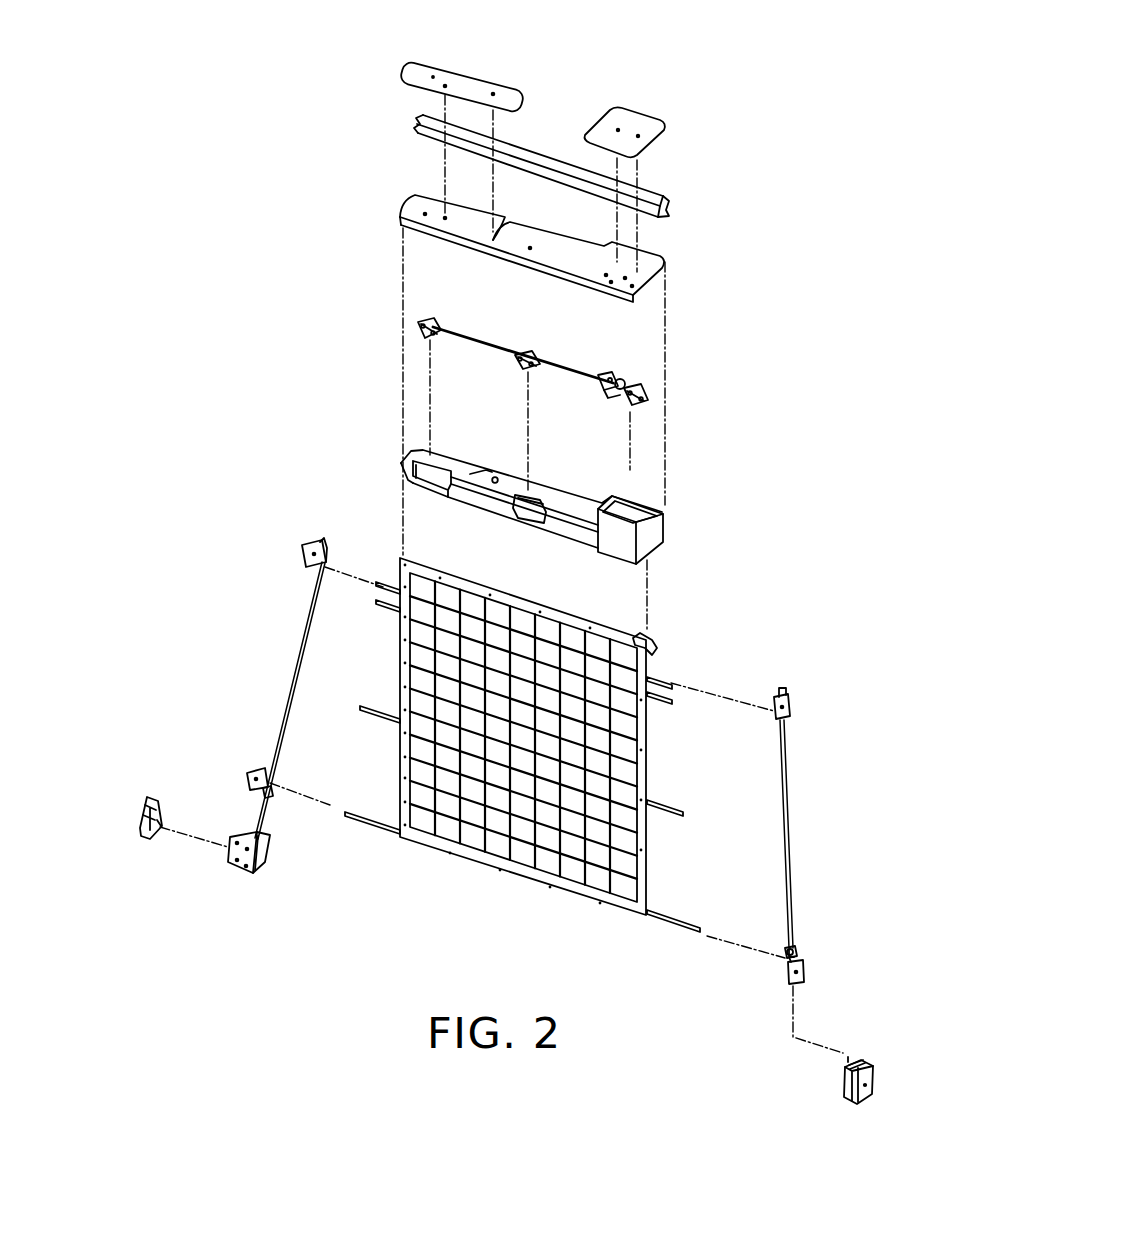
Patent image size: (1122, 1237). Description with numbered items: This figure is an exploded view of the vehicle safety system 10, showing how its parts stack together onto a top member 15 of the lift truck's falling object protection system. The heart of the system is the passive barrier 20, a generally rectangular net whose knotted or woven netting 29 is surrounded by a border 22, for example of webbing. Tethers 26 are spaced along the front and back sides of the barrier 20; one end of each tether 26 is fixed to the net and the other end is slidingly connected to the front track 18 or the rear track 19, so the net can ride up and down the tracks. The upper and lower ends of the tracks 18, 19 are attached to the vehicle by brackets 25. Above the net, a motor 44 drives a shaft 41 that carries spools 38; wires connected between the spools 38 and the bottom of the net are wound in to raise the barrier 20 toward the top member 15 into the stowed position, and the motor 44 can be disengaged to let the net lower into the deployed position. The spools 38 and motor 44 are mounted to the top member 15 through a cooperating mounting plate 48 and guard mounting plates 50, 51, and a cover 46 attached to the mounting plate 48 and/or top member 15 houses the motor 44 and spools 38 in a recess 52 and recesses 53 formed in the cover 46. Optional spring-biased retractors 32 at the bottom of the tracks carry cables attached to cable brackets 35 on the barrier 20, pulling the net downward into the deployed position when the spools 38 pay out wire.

The vehicle safety system 10 is at (764, 90).
The top member 15 is at (658, 195).
The front track 18 is at (297, 657).
The rear track 19 is at (789, 836).
The passive barrier 20 is at (550, 736).
The border 22 is at (478, 582).
The bracket 25 is at (304, 548).
The tether 26 is at (377, 585).
The wire mesh grid 29 is at (548, 614).
The retractor 32 is at (159, 810).
The cable bracket 35 is at (268, 790).
The spool 38 is at (426, 320).
The shaft 41 is at (472, 346).
The motor 44 is at (612, 378).
The cover 46 is at (509, 490).
The mounting plate 48 is at (415, 200).
The guard mounting plate 50 is at (468, 84).
The guard mounting plate 51 is at (639, 118).
The recess 52 is at (632, 518).
The recess 53 is at (437, 466).